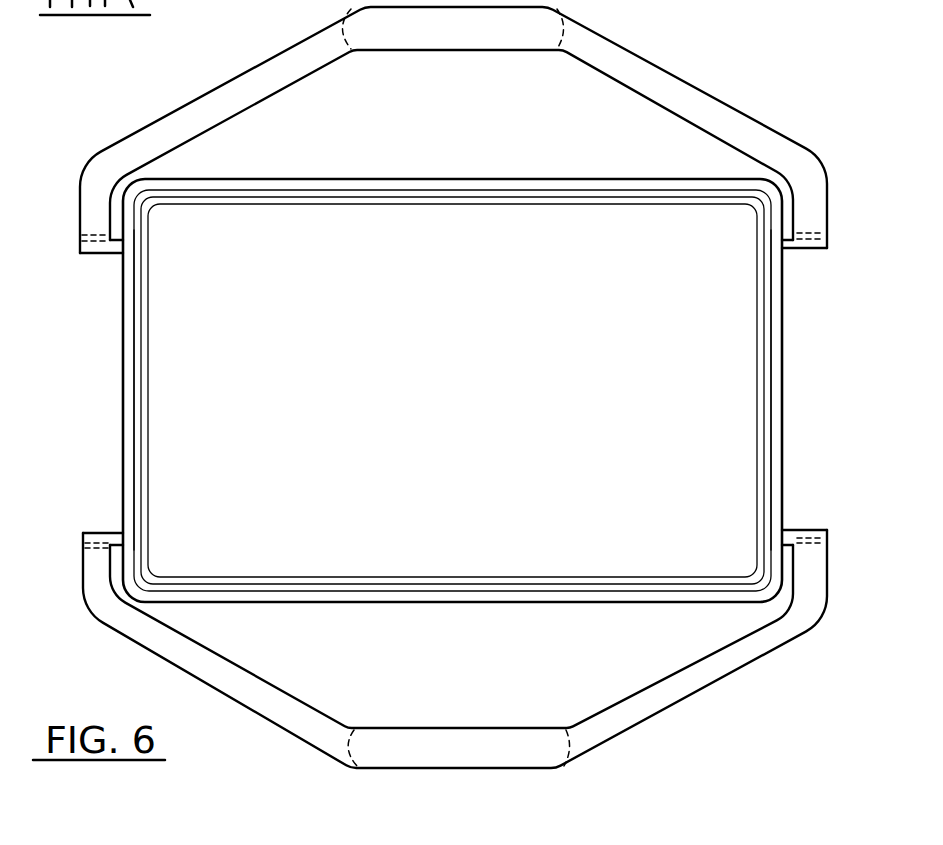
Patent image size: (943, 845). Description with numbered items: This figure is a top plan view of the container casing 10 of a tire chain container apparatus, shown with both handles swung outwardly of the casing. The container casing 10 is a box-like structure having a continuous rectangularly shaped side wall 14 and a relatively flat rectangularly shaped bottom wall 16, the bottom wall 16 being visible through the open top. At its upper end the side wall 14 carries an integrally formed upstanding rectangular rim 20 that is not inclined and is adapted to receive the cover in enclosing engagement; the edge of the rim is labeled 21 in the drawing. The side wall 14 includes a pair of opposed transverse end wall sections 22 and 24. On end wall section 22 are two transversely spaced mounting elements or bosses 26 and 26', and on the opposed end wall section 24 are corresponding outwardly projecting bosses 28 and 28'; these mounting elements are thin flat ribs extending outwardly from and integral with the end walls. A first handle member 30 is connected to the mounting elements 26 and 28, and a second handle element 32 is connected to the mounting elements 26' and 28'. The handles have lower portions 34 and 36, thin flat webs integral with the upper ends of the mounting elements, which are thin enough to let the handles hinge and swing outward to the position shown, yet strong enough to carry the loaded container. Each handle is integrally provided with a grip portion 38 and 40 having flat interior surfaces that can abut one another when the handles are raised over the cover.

The container casing 10 is at (419, 171).
The side wall 14 is at (407, 590).
The bottom wall 16 is at (425, 192).
The rim 20 is at (123, 407).
The tray rim 21 is at (482, 178).
The end wall section 22 is at (137, 377).
The end wall section 24 is at (770, 378).
The mounting element 26 is at (76, 505).
The mounting element 26' is at (86, 282).
The mounting element 28 is at (817, 504).
The mounting element 28' is at (814, 274).
The first handle member 30 is at (667, 710).
The second handle element 32 is at (718, 98).
The lower portion 34 is at (82, 558).
The lower portion 36 is at (100, 232).
The grip portion 38 is at (478, 735).
The grip portion 40 is at (478, 33).